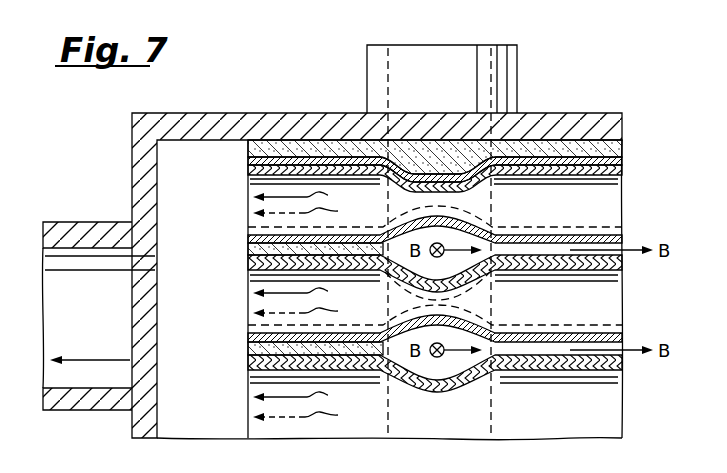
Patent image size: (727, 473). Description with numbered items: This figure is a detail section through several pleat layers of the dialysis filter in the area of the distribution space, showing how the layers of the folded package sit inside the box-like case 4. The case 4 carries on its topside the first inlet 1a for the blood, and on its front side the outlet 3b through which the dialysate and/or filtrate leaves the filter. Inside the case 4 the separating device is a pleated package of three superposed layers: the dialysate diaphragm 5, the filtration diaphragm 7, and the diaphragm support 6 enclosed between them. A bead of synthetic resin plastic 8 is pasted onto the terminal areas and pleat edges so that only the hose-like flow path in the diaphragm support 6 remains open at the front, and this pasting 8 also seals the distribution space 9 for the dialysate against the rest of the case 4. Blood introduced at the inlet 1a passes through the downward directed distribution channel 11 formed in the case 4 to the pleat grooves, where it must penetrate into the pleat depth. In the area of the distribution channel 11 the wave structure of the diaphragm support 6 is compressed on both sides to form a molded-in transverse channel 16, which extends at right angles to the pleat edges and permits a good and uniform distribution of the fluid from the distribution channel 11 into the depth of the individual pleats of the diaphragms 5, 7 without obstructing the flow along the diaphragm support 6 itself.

The first inlet 1a is at (467, 60).
The box-like case 4 is at (567, 126).
The distribution space 9 is at (185, 152).
The outlet for dialysate and/or filtrate 3b is at (92, 232).
The bead of synthetic resin plastic 8 is at (622, 148).
The dialysate diaphragm 5 is at (248, 162).
The filtration diaphragm 7 is at (248, 239).
The diaphragm support 6 is at (248, 190).
The transverse channel 16 is at (470, 196).
The distribution channel 11 is at (495, 300).